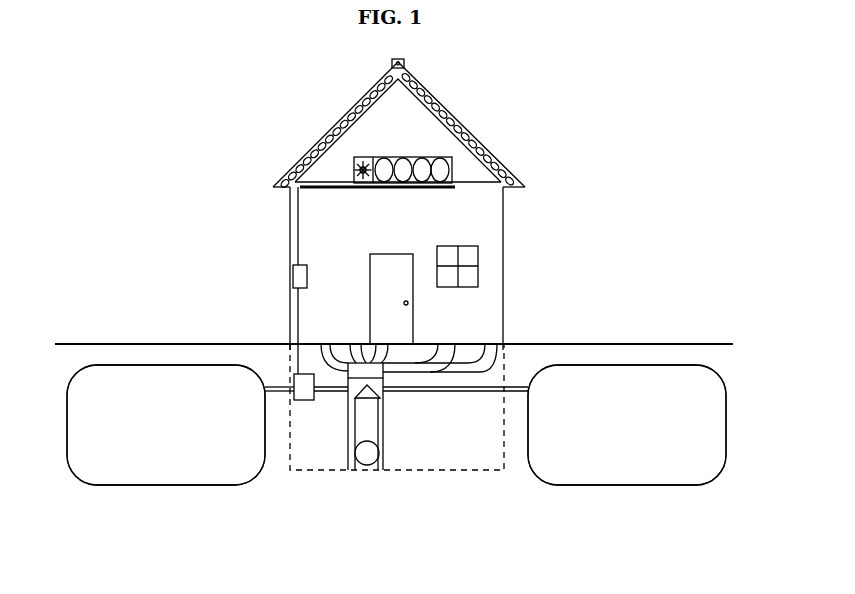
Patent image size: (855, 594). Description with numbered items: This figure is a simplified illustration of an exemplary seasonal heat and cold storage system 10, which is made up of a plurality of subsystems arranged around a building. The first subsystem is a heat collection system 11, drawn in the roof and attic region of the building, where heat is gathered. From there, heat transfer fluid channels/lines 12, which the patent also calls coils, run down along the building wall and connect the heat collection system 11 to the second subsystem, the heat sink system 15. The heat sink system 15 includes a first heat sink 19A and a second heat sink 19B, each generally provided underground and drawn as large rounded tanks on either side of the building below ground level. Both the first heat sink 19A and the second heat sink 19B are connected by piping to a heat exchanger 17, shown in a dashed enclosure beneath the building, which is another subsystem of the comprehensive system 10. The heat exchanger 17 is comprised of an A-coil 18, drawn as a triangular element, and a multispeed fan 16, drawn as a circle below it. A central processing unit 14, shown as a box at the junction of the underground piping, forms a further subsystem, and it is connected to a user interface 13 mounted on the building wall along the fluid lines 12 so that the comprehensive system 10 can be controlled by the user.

The seasonal heat and cold storage system 10 is at (175, 106).
The heat collection system 11 is at (415, 150).
The heat transfer fluid channels/lines 12 is at (297, 225).
The user interface 13 is at (292, 277).
The central processing unit 14 is at (292, 380).
The heat sink system 15 is at (155, 493).
The multispeed fan 16 is at (376, 462).
The heat exchanger 17 is at (385, 408).
The A-coil 18 is at (385, 386).
The first heat sink 19A is at (166, 425).
The second heat sink 19B is at (627, 425).